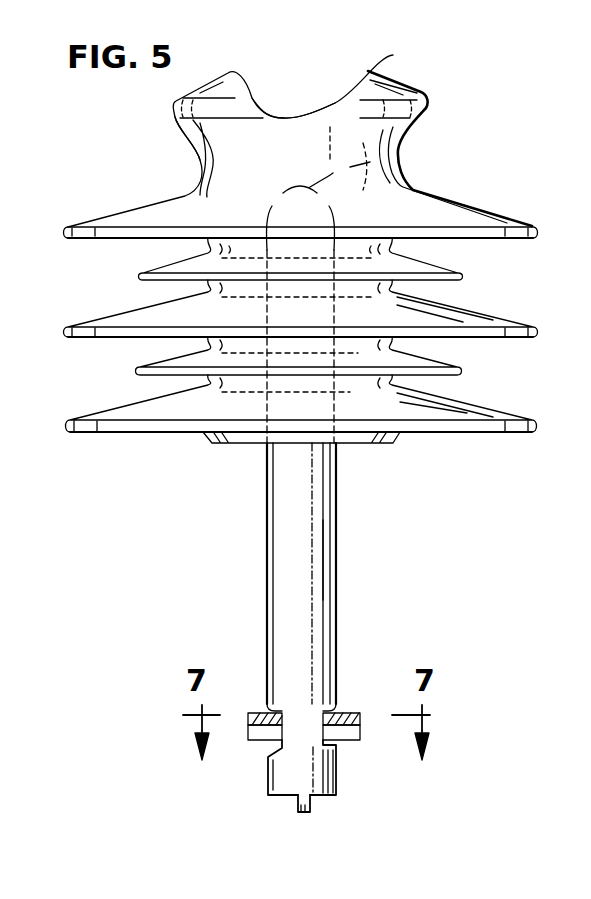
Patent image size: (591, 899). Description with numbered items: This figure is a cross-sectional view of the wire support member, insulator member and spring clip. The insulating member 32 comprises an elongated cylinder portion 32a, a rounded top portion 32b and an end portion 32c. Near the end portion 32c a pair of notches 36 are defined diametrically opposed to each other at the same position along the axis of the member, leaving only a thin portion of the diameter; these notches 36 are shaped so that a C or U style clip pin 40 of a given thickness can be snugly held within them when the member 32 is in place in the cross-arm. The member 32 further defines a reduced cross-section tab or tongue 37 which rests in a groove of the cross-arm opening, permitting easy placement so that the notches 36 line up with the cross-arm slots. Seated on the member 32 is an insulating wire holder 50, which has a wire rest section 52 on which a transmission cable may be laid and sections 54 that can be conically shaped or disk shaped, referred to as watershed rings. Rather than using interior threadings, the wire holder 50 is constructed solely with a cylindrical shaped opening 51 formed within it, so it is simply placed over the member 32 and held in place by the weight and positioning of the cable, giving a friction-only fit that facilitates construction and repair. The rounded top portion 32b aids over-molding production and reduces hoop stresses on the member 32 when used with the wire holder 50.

The wire holder 50 is at (132, 194).
The wire rest section 52 is at (393, 55).
The rounded top portion 32b is at (422, 133).
The cylindrical shaped opening 51 is at (333, 240).
The sections 54 is at (453, 197).
The insulating member 32 is at (324, 502).
The elongated cylinder portion 32a is at (318, 558).
The notches 36 is at (270, 708).
The clip pin 40 is at (343, 712).
The end portion 32c is at (330, 772).
The tab or tongue 37 is at (298, 813).